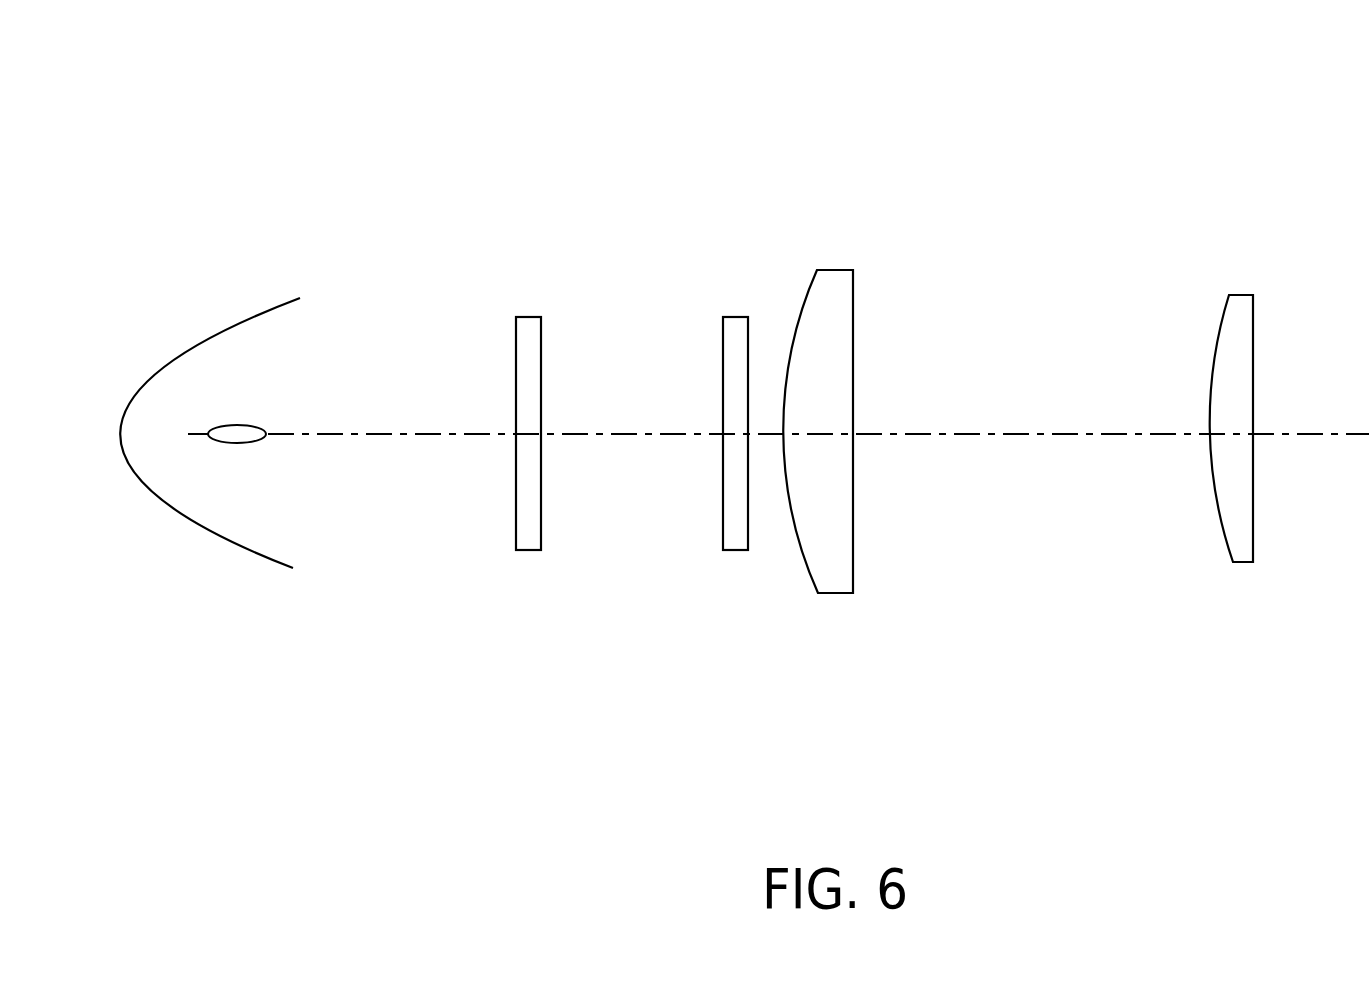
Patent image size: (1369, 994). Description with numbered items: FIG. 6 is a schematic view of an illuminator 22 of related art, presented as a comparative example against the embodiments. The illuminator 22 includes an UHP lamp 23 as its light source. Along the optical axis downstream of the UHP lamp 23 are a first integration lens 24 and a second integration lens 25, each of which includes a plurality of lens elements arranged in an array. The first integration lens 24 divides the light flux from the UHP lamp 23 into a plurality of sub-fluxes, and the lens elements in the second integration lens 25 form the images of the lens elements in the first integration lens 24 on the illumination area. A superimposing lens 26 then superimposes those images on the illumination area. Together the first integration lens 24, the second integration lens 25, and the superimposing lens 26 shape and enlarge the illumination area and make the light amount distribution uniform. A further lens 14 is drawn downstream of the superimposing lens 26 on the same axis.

The illuminator 22 is at (510, 126).
The UHP lamp 23 is at (213, 335).
The first integration lens 24 is at (525, 312).
The second integration lens 25 is at (733, 312).
The superimposing lens 26 is at (832, 268).
The lens 14 is at (1240, 293).